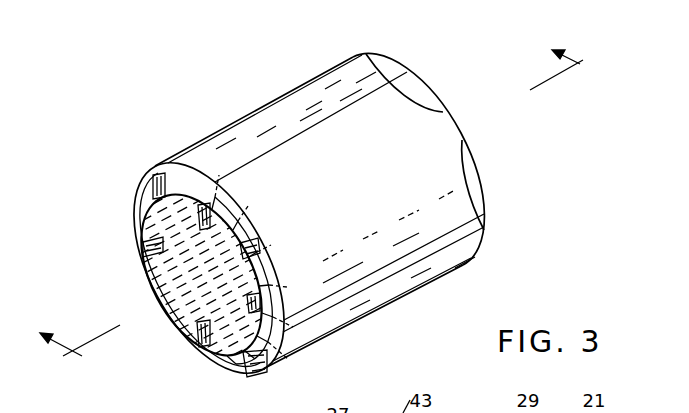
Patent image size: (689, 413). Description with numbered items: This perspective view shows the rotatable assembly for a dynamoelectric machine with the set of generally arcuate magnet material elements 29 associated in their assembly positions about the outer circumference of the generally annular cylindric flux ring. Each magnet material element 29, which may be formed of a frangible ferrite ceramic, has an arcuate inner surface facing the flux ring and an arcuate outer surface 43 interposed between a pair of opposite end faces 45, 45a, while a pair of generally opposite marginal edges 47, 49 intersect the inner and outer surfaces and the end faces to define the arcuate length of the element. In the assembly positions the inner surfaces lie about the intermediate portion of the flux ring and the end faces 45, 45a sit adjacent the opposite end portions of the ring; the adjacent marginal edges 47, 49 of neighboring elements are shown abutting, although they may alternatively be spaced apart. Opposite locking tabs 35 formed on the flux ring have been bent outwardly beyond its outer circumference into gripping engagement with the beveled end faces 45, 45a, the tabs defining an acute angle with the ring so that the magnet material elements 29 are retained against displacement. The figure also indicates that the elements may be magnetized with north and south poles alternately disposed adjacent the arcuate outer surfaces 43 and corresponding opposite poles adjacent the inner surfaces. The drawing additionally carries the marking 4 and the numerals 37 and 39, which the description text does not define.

The magnet material elements 29 is at (300, 68).
The arcuate outer surface 43 is at (277, 101).
The end face 45 is at (153, 173).
The end face 45a is at (389, 57).
The marginal edge 47 is at (278, 146).
The marginal edge 49 is at (360, 101).
The locking tabs 35 is at (153, 183).
The inner bore surface 37 is at (172, 254).
The annular rim 39 is at (160, 275).
The section line 4- 4 is at (301, 189).